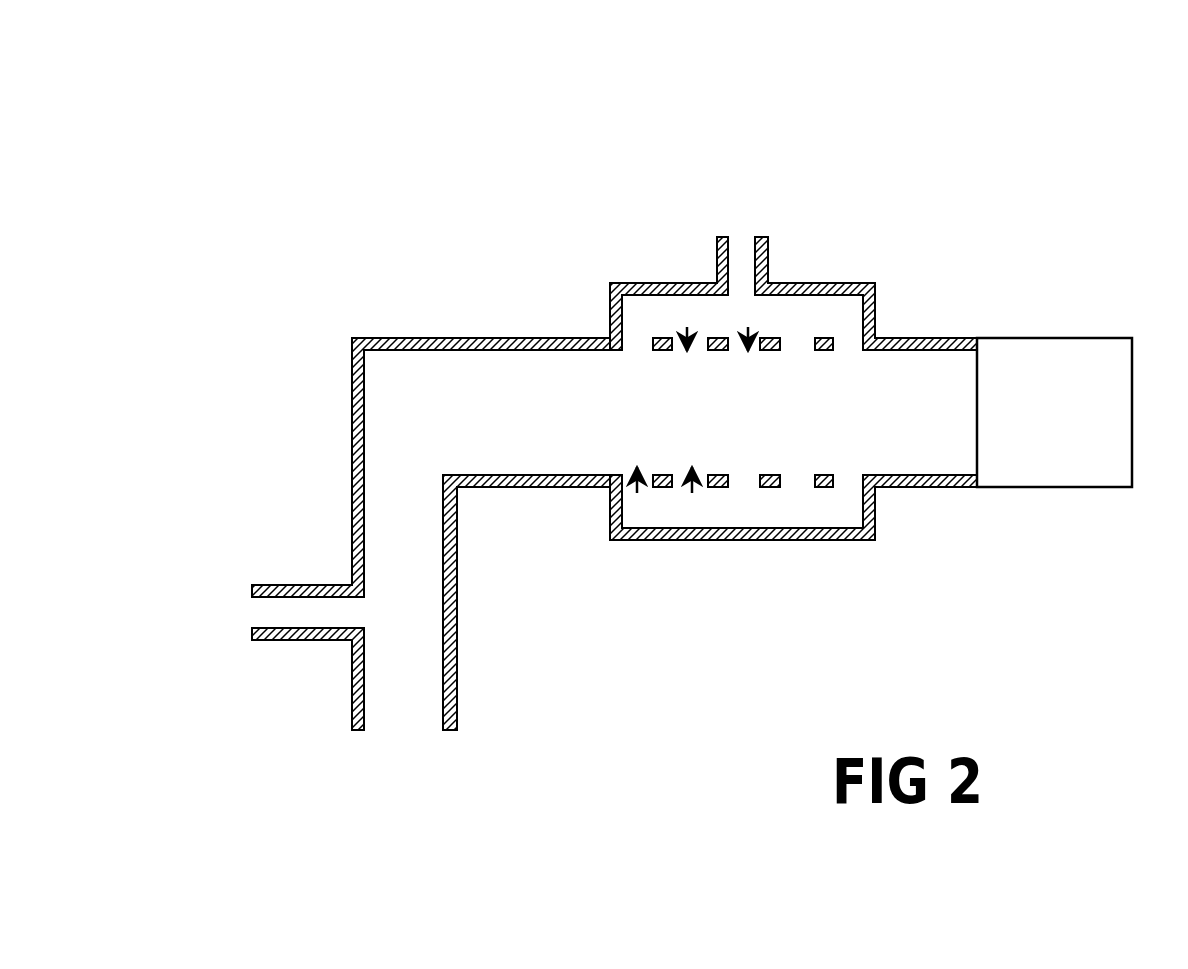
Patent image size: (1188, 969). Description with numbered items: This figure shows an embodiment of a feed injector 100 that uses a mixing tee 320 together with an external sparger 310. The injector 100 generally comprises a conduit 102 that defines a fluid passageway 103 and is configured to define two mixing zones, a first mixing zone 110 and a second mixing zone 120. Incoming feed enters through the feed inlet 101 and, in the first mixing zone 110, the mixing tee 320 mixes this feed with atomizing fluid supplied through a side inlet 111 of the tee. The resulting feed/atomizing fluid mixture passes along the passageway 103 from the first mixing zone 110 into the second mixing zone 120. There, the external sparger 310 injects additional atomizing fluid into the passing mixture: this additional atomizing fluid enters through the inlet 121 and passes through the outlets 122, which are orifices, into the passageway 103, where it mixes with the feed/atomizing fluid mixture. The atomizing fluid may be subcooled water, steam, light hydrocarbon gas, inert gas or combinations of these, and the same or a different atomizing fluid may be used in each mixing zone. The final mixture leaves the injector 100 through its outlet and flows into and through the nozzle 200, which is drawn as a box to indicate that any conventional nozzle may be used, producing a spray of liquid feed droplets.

The feed injector 100 is at (870, 186).
The feed inlet 101 is at (407, 742).
The conduit 102 is at (540, 328).
The fluid passageway 103 is at (510, 423).
The first mixing zone 110 is at (420, 616).
The second gas flow 111 is at (238, 610).
The second mixing zone 120 is at (785, 376).
The inlet 121 is at (742, 226).
The outlets 122 is at (800, 490).
The nozzle 200 is at (1030, 338).
The external sparger 310 is at (692, 540).
The mixing tee 320 is at (343, 646).